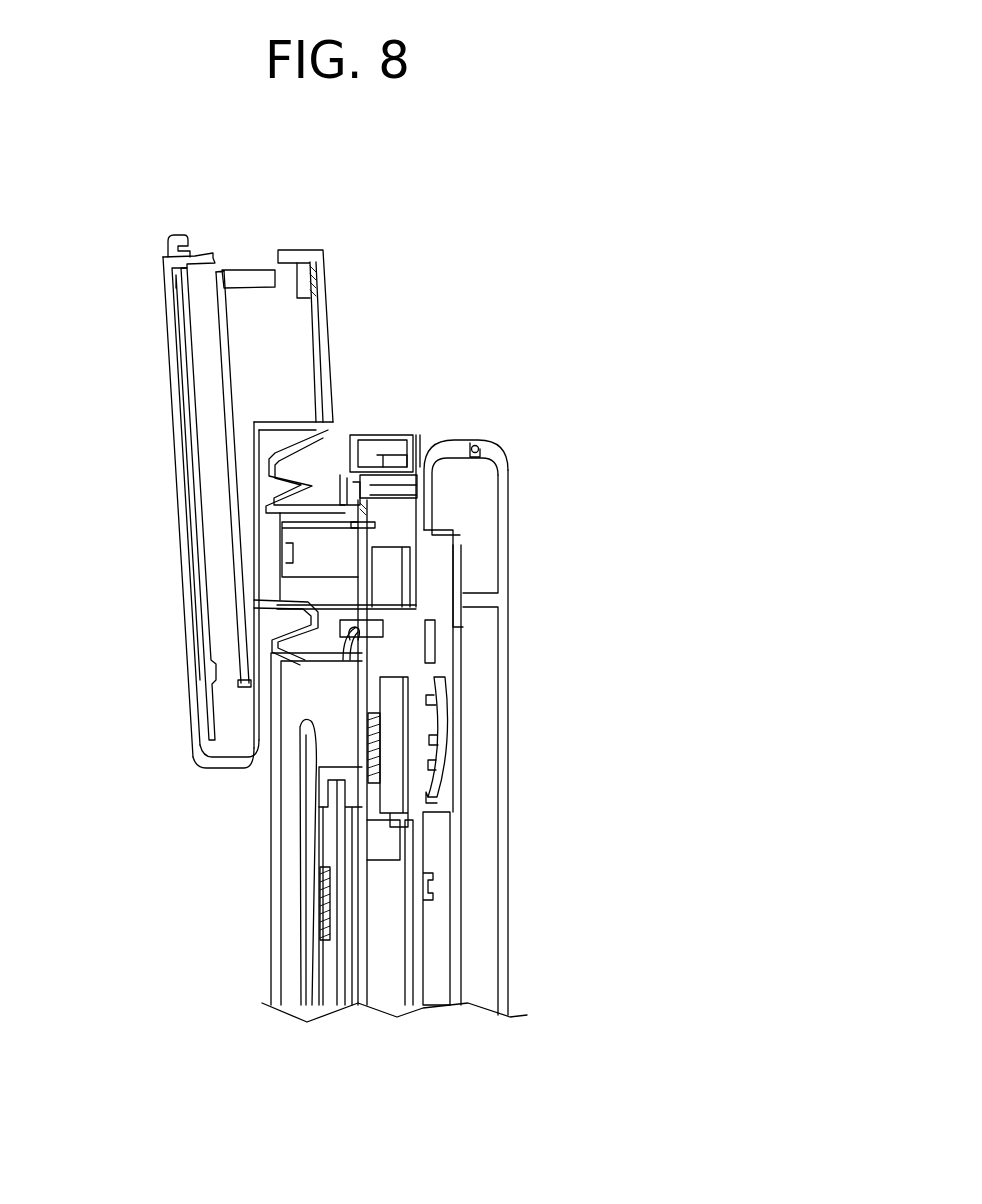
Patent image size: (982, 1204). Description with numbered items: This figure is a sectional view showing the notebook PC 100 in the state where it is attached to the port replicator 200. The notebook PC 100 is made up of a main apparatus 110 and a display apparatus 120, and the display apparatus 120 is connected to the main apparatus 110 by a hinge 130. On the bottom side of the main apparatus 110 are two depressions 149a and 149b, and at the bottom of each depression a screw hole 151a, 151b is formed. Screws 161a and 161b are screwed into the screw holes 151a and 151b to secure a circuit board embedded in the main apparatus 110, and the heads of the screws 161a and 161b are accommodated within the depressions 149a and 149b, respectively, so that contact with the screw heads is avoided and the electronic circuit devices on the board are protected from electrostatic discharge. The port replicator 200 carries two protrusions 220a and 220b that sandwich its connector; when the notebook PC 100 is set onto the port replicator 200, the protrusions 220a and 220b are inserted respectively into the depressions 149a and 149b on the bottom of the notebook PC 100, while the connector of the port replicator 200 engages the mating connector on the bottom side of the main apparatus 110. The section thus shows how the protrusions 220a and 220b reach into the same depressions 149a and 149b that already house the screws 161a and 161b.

The notebook PC 100 is at (647, 617).
The main apparatus 110 is at (277, 943).
The display apparatus 120 is at (504, 846).
The hinge 130 is at (527, 446).
The depression 149a is at (348, 476).
The depression 149b is at (338, 643).
The screw hole 151a is at (365, 497).
The screw hole 151b is at (352, 636).
The screw 161a is at (363, 468).
The screw 161b is at (362, 658).
The port replicator 200 is at (88, 273).
The protrusion 220a is at (314, 626).
The protrusion 220b is at (309, 483).